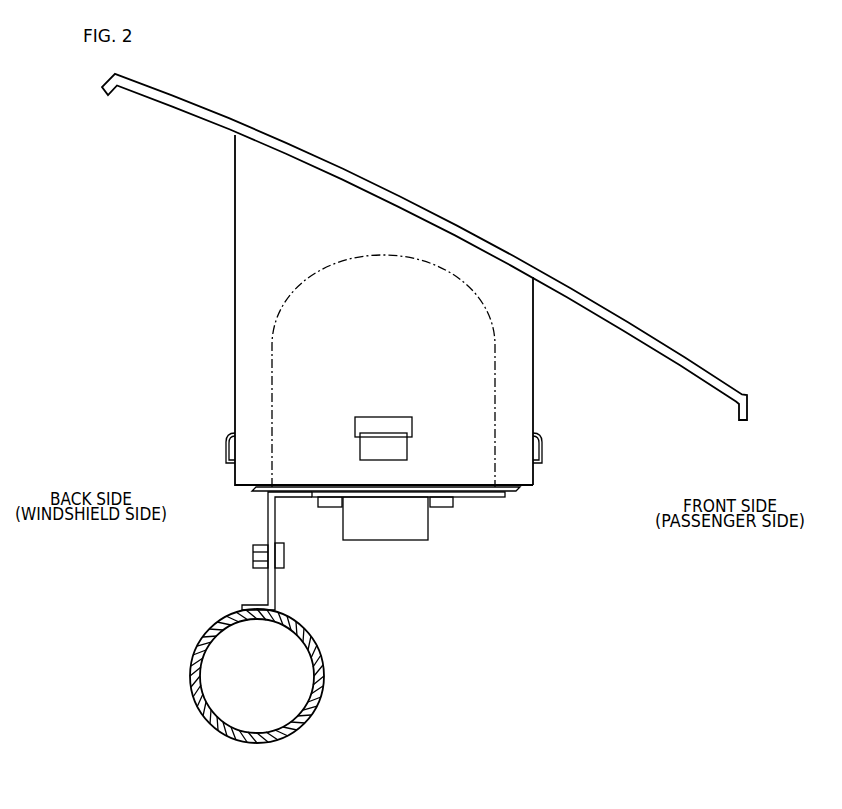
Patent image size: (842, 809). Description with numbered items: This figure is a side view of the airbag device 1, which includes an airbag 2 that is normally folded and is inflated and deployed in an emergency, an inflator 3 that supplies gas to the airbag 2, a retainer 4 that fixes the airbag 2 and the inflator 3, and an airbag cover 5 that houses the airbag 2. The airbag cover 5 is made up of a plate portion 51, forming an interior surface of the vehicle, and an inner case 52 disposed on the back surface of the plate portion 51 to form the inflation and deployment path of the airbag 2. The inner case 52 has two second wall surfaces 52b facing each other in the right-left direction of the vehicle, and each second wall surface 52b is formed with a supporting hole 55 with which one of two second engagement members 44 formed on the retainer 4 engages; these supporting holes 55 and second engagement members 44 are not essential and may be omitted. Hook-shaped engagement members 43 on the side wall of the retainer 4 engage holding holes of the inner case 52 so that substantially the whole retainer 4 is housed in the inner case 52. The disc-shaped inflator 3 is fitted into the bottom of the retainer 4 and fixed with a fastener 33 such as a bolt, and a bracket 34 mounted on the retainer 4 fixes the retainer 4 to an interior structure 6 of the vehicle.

The airbag device 1 is at (489, 139).
The airbag 2 is at (317, 262).
The inflator 3 is at (383, 543).
The fastener 33 is at (327, 510).
The bracket 34 is at (268, 525).
The retainer 4 is at (242, 495).
The engagement members 43 is at (226, 449).
The second engagement members 44 is at (408, 447).
The airbag cover 5 is at (128, 143).
The plate portion 51 is at (271, 135).
The inner case 52 is at (197, 214).
The second wall surfaces 52b is at (293, 210).
The supporting holes 55 is at (387, 415).
The interior structure 6 is at (190, 676).